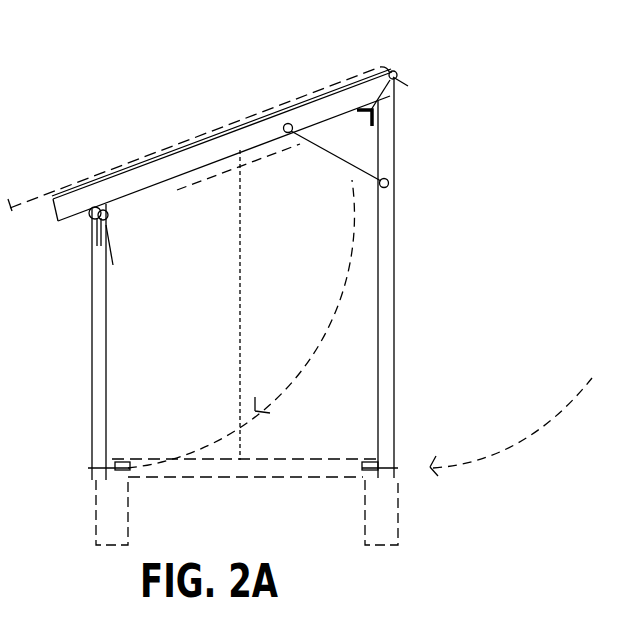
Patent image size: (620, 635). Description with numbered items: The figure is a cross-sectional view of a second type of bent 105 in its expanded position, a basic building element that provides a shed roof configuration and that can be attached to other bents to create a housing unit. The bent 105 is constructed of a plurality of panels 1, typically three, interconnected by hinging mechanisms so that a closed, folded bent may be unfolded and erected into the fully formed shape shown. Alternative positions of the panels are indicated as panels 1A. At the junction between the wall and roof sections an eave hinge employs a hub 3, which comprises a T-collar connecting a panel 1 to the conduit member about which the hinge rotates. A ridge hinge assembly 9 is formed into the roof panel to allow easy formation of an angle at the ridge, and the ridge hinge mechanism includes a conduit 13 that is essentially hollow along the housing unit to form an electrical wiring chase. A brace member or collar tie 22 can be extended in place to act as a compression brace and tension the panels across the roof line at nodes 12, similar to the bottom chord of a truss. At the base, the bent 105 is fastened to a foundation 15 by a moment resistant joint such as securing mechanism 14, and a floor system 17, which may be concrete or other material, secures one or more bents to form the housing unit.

The panel 1 is at (163, 166).
The alternative panel position 1A is at (97, 200).
The hub 3 is at (109, 214).
The ridge hinge assembly 9 is at (396, 72).
The node 12 is at (287, 122).
The conduit 13 is at (370, 128).
The securing mechanism 14 is at (92, 468).
The foundation 15 is at (100, 510).
The floor system 17 is at (245, 478).
The collar tie 22 is at (336, 156).
The bent 105 is at (409, 296).